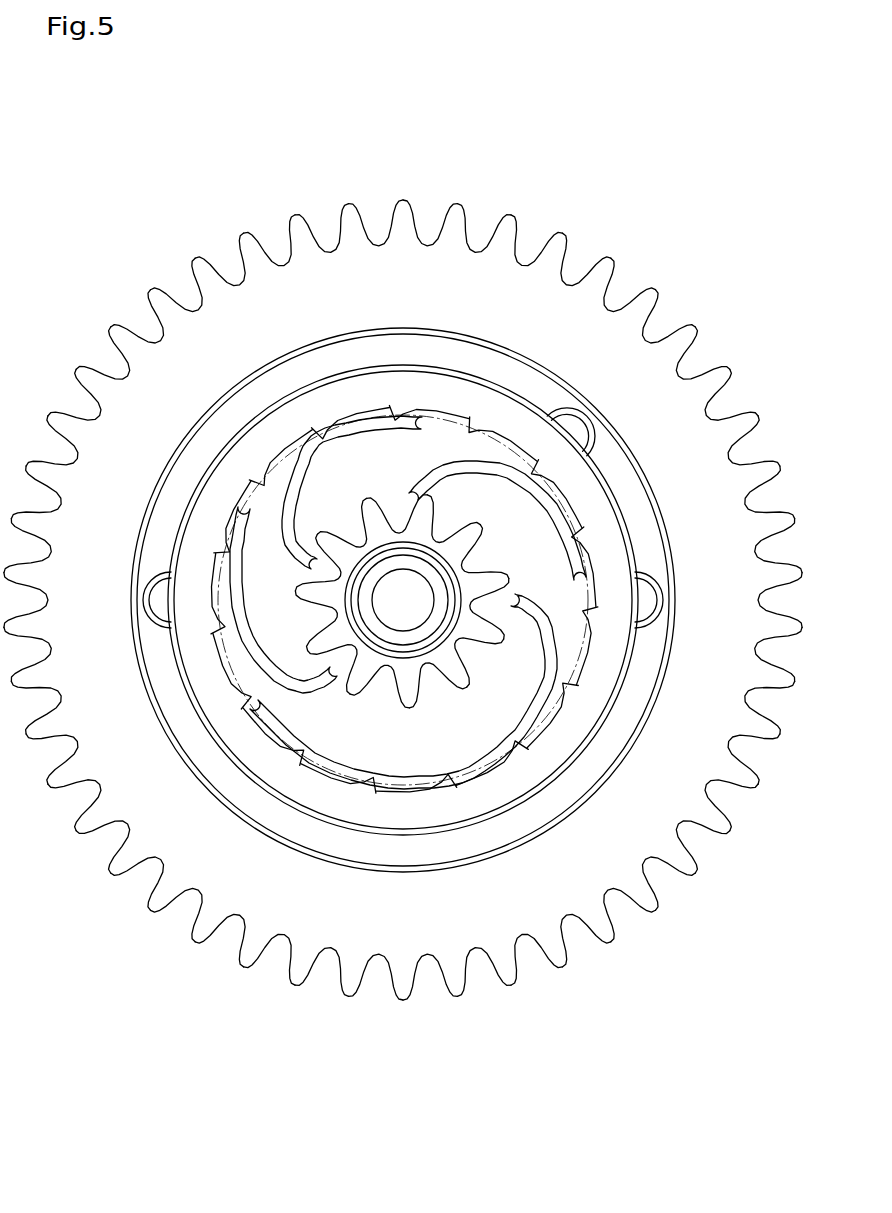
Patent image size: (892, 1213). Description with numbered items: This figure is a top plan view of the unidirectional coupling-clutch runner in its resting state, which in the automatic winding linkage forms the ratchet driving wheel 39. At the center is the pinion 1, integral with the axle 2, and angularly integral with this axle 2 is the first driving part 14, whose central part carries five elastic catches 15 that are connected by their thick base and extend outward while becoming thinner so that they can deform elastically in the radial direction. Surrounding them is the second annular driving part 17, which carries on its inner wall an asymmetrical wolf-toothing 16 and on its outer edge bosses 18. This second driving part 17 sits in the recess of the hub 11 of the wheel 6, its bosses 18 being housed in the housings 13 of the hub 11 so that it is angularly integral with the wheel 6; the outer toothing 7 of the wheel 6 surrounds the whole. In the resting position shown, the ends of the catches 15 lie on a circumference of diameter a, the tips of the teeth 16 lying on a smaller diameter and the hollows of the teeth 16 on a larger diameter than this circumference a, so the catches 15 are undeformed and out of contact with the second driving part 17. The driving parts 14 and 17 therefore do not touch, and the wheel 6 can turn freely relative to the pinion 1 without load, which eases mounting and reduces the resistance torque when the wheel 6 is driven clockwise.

The ratchet driving wheel 39 is at (148, 972).
The toothing of wheel 7 is at (652, 302).
The wheel 6 is at (152, 817).
The hub 11 is at (640, 688).
The housings 13 is at (655, 590).
The bosses 18 is at (640, 604).
The second annular driving part 17 is at (570, 740).
The circumference of diameter a is at (318, 428).
The asymmetrical wolf-toothing 16 is at (257, 497).
The elastic catches 15 is at (413, 428).
The pinion 1 is at (498, 568).
The first driving part 14 is at (472, 652).
The axle 2 is at (385, 616).